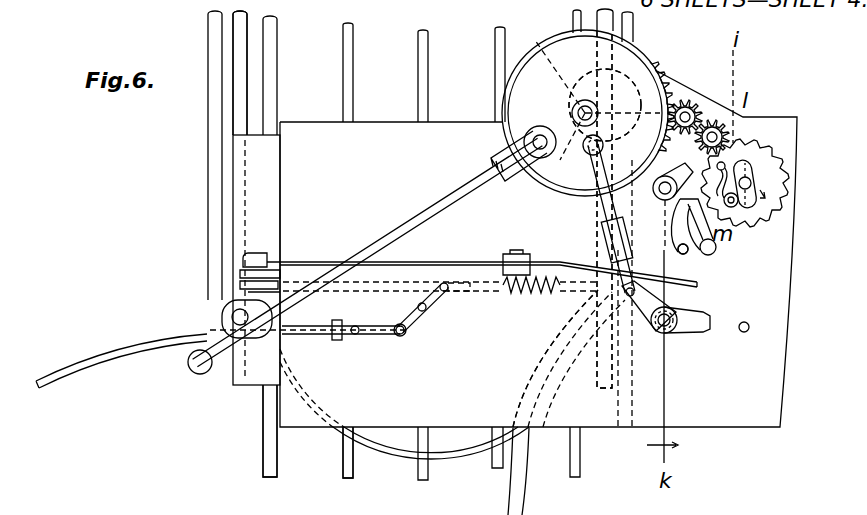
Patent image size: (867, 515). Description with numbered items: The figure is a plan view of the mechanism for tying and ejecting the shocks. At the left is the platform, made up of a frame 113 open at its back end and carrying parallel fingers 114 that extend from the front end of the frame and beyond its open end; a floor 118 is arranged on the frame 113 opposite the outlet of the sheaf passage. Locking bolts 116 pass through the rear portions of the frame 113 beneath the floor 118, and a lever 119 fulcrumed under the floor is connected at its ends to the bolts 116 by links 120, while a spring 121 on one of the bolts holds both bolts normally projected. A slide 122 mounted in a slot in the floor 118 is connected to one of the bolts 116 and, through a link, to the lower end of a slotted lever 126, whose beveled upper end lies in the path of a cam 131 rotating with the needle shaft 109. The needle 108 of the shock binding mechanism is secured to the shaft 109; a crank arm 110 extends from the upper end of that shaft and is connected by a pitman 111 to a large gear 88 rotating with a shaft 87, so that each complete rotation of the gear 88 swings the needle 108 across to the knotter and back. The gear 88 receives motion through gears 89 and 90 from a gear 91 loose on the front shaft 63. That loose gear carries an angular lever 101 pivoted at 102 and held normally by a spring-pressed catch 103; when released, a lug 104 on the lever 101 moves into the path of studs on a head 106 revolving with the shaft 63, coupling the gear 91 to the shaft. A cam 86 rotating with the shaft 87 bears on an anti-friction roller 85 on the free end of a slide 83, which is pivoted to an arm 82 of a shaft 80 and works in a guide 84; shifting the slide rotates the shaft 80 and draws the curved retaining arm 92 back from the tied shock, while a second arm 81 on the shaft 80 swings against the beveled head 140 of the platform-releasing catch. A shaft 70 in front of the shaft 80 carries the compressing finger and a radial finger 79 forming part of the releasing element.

The front shaft 63 is at (744, 332).
The shaft 70 is at (652, 182).
The finger 79 is at (625, 209).
The shaft 80 is at (672, 330).
The arm 81 is at (706, 315).
The arm 82 is at (650, 312).
The slide 83 is at (604, 209).
The guide 84 is at (601, 239).
The anti-friction roller 85 is at (523, 165).
The cam 86 is at (544, 41).
The shaft 87 is at (572, 112).
The large gear 88 is at (558, 105).
The gear 89 is at (691, 92).
The gear 90 is at (735, 66).
The gear 91 is at (756, 150).
The curved retaining arm 92 is at (407, 458).
The angular lever 101 is at (704, 167).
The pivot 102 is at (730, 210).
The spring pressed catch 103 is at (716, 250).
The lug 104 is at (689, 257).
The head 106 is at (749, 160).
The needle 108 is at (110, 350).
The shaft 109 is at (230, 312).
The crank arm 110 is at (204, 332).
The pitman 111 is at (386, 225).
The frame 113 is at (247, 85).
The parallel fingers 114 is at (345, 462).
The locking bolts 116 is at (320, 338).
The floor 118 is at (265, 186).
The lever 119 is at (425, 327).
The links 120 is at (378, 336).
The spring 121 is at (540, 358).
The slide 122 is at (436, 270).
The lever 126 is at (283, 258).
The cam 131 is at (267, 338).
The beveled head 140 is at (697, 284).